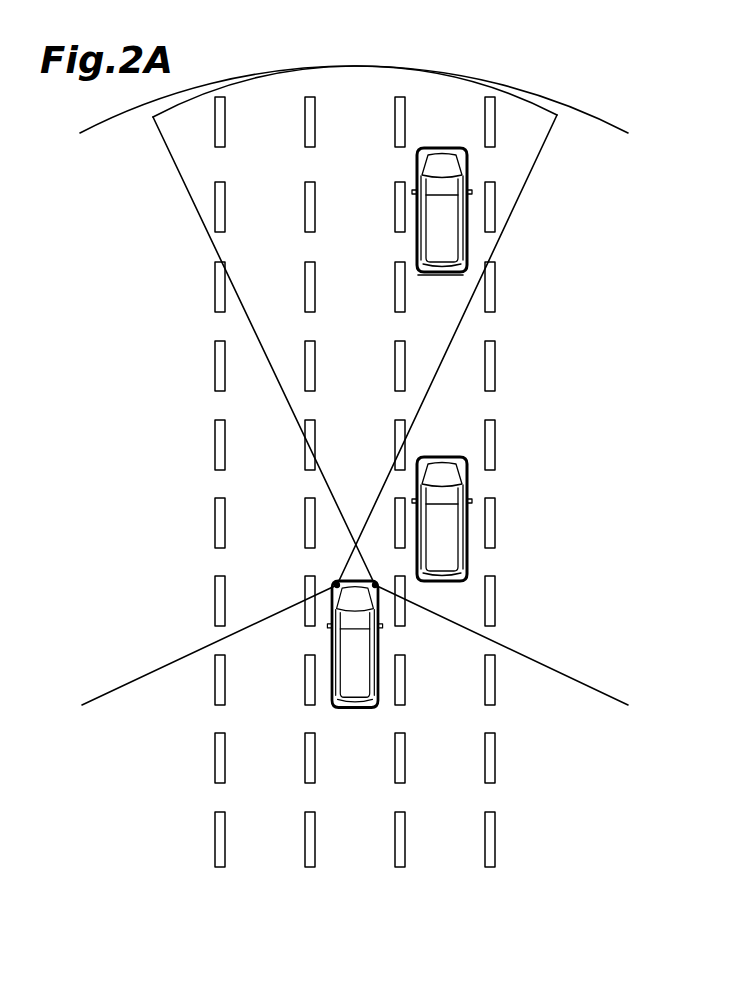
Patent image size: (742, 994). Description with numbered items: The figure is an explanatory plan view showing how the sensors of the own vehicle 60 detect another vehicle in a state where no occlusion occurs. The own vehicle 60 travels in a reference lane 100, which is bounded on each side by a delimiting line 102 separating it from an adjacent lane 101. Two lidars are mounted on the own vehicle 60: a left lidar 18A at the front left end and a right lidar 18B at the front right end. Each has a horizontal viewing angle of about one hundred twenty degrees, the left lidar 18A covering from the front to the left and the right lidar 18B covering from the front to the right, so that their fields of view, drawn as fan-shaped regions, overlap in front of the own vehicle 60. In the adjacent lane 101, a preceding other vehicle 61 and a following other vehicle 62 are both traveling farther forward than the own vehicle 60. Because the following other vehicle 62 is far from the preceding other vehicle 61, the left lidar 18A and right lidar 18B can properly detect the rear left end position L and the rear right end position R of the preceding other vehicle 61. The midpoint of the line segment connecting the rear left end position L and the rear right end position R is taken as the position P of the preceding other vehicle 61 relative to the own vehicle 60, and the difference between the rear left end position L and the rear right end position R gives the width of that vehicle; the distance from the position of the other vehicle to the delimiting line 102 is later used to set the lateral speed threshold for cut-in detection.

The own vehicle 60 is at (352, 663).
The preceding other vehicle 61 is at (445, 208).
The following other vehicle 62 is at (442, 526).
The left lidar 18A is at (337, 583).
The right lidar 18B is at (377, 585).
The reference lane 100 is at (355, 850).
The adjacent lane 101 is at (262, 843).
The delimiting line 102 is at (310, 752).
The rear left end position L is at (418, 275).
The position P is at (440, 278).
The rear right end position R is at (463, 275).